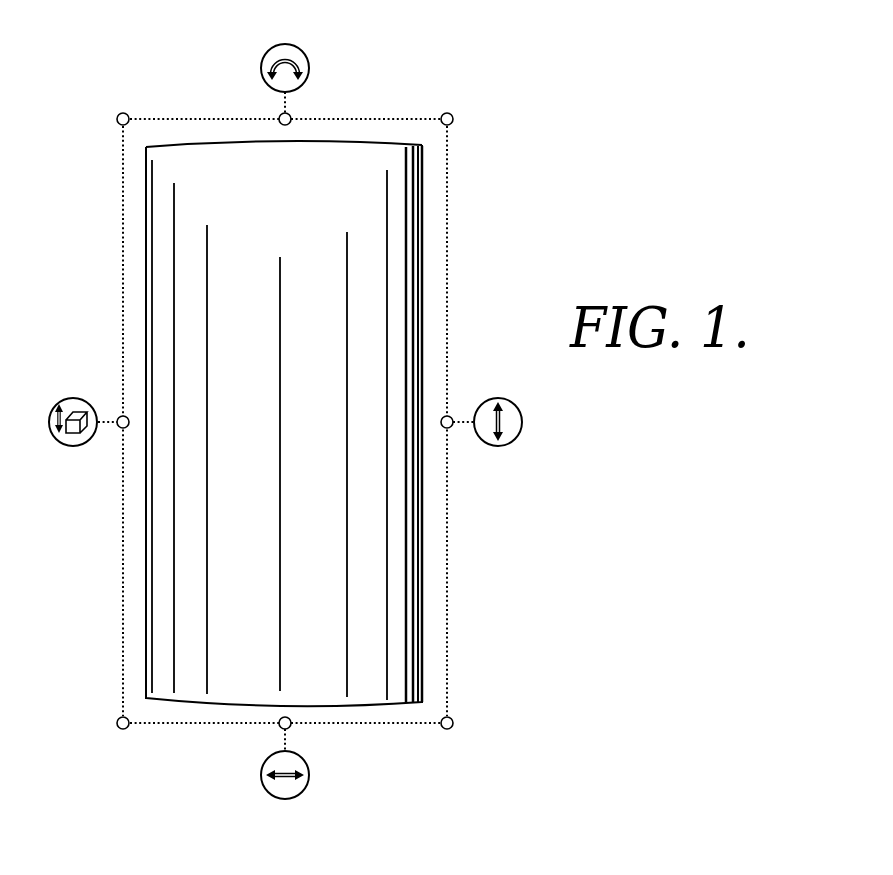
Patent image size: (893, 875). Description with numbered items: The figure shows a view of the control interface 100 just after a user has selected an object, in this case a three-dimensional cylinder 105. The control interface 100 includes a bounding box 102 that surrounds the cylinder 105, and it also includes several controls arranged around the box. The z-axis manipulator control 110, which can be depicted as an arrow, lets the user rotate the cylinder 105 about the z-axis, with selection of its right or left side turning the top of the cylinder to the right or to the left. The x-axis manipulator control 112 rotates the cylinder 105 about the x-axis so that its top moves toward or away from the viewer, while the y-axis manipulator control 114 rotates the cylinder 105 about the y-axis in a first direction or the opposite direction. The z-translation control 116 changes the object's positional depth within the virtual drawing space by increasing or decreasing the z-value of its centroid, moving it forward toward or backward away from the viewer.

The control interface 100 is at (513, 142).
The bounding box 102 is at (447, 245).
The three-dimensional cylinder 105 is at (357, 142).
The z-axis manipulator control 110 is at (285, 44).
The x-axis manipulator control 112 is at (523, 422).
The y-axis manipulator control 114 is at (285, 799).
The z-translation control 116 is at (73, 397).